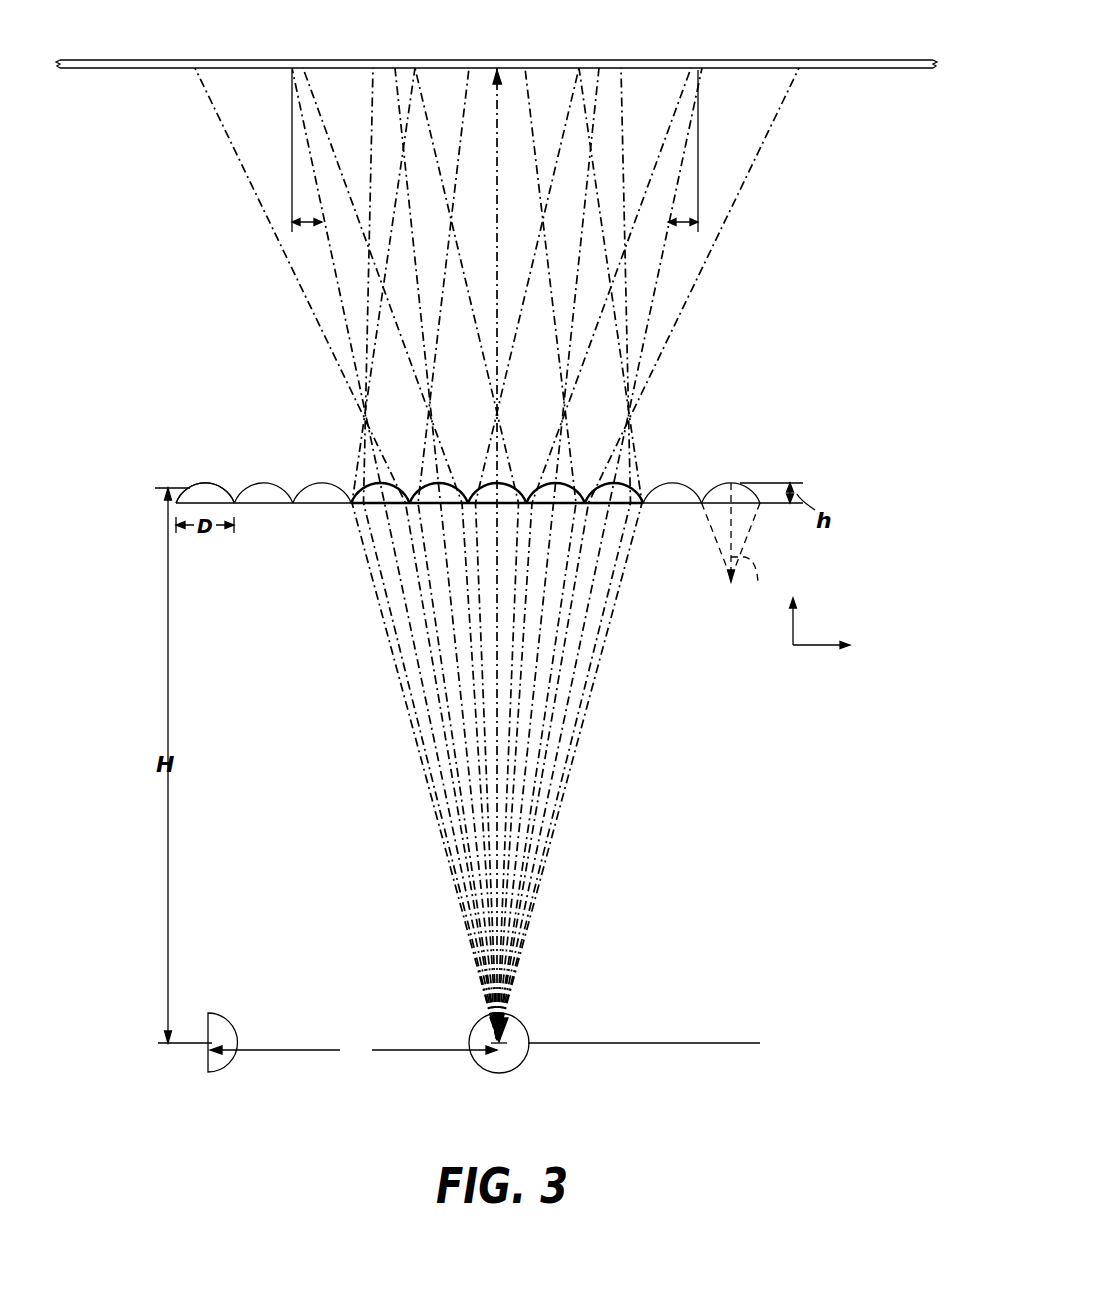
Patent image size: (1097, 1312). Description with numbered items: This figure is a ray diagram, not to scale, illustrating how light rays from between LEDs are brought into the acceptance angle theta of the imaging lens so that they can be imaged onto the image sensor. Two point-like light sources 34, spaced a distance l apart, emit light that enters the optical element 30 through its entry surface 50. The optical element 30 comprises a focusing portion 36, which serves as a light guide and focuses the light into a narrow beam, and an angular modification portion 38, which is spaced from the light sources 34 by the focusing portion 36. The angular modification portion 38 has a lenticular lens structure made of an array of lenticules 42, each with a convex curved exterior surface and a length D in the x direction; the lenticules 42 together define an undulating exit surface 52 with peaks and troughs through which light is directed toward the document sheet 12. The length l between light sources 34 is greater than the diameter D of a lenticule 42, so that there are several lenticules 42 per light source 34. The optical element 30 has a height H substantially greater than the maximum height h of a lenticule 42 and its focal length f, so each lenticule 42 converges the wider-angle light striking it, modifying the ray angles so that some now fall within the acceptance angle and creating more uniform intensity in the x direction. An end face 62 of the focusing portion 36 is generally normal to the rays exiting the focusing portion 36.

The document sheet 12 is at (836, 60).
The optical element 30 is at (277, 1087).
The light sources 34 is at (515, 1058).
The focusing portion 36 is at (710, 652).
The angular modification portion 38 is at (177, 480).
The lenticule 42 is at (235, 502).
The entry surface 50 is at (700, 1043).
The exit surface 52 is at (735, 493).
The end face 62 is at (738, 507).